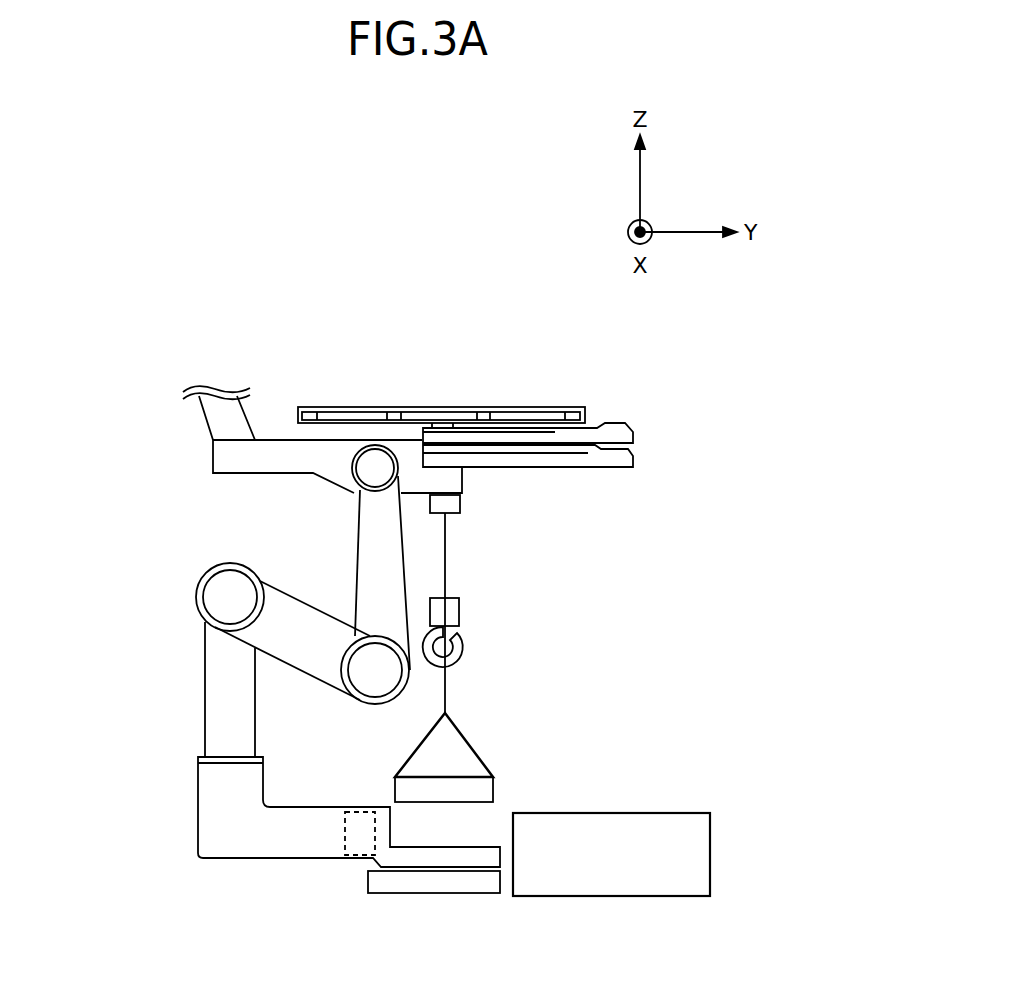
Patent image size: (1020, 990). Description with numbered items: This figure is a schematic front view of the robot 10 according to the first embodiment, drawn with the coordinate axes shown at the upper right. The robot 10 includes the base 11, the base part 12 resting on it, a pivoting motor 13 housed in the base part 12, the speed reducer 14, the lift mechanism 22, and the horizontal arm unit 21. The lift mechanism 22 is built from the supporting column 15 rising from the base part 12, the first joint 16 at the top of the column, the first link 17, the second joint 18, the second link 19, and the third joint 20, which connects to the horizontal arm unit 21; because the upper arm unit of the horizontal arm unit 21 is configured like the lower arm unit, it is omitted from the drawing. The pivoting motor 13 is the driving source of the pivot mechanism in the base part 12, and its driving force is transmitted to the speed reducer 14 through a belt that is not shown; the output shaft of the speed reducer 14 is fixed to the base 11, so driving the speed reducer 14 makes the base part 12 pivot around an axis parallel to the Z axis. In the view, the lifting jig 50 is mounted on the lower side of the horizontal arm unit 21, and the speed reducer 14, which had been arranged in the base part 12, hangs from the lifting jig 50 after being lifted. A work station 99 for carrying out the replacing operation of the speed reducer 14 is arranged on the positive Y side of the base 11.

The robot 10 is at (312, 304).
The base 11 is at (430, 887).
The base part 12 is at (238, 850).
The pivoting motor 13 is at (355, 858).
The speed reducer 14 is at (485, 787).
The supporting column 15 is at (215, 703).
The first joint 16 is at (210, 600).
The first link 17 is at (303, 645).
The second joint 18 is at (372, 687).
The second link 19 is at (360, 551).
The third joint 20 is at (372, 469).
The horizontal arm unit 21 is at (160, 457).
The lift mechanism 22 is at (122, 570).
The lifting jig 50 is at (503, 604).
The work station 99 is at (622, 888).